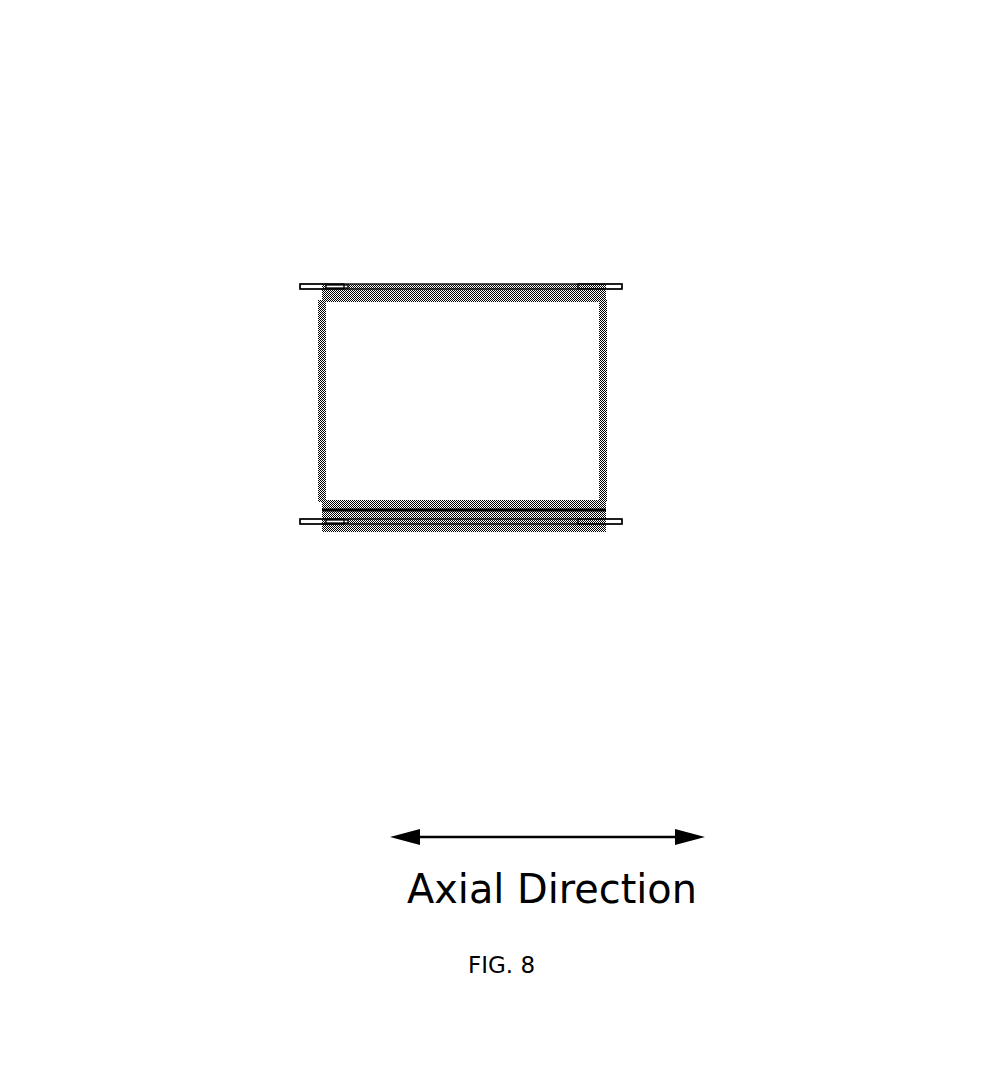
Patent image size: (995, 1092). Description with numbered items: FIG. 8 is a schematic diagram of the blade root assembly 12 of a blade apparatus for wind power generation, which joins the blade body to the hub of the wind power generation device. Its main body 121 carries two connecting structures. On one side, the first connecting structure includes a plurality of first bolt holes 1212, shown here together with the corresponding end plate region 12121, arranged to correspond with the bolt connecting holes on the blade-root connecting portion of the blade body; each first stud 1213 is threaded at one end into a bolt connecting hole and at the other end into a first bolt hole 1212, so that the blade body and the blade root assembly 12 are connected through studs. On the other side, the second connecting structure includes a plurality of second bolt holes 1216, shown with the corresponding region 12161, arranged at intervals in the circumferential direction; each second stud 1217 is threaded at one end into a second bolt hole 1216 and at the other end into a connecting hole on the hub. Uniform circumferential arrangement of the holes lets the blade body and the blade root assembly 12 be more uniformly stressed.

The blade root assembly 12 is at (372, 88).
The cell body 121 is at (465, 297).
The first bolt hole 1212 is at (588, 523).
The end plate portion 12121 is at (580, 285).
The first stud 1213 is at (608, 287).
The second bolt hole 1216 is at (343, 287).
The connecting piece portion 12161 is at (348, 523).
The second stud 1217 is at (302, 287).